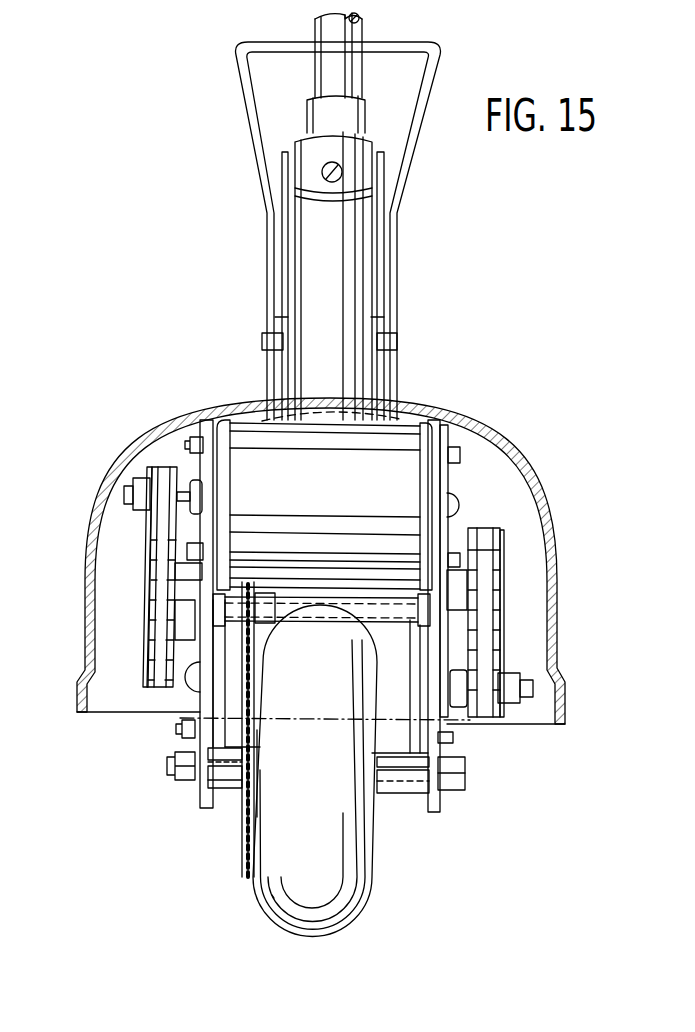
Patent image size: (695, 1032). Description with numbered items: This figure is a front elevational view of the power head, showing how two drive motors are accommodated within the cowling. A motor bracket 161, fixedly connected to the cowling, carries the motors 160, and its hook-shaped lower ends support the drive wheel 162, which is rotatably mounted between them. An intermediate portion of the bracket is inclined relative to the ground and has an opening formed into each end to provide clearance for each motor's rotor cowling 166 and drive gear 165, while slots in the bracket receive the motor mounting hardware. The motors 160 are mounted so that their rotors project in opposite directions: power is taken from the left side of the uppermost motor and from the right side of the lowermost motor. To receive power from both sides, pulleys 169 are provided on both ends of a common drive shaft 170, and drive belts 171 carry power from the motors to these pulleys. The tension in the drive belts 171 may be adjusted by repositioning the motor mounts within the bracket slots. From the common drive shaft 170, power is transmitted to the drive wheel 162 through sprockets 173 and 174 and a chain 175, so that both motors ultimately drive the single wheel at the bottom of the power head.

The motors 160 is at (291, 481).
The motor bracket 161 is at (195, 796).
The drive wheel 162 is at (372, 860).
The drive gear 165 is at (148, 467).
The rotor cowling 166 is at (200, 470).
The pulleys 169 is at (90, 592).
The common drive shaft 170 is at (360, 600).
The drive belts 171 is at (165, 467).
The sprocket 173 is at (262, 605).
The sprocket 174 is at (240, 846).
The chain 175 is at (240, 732).